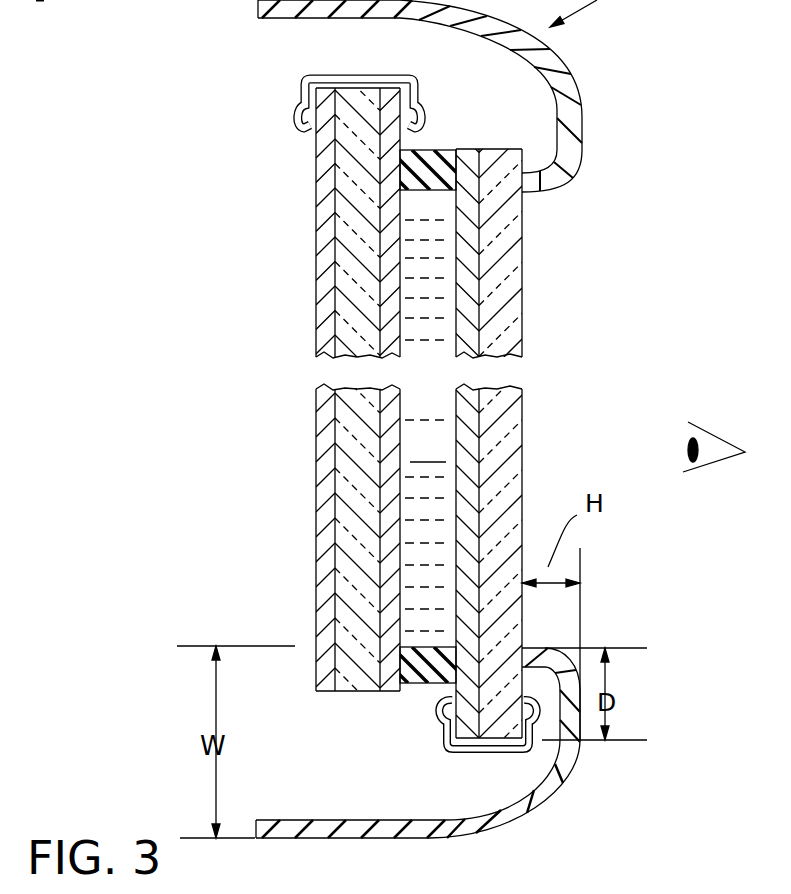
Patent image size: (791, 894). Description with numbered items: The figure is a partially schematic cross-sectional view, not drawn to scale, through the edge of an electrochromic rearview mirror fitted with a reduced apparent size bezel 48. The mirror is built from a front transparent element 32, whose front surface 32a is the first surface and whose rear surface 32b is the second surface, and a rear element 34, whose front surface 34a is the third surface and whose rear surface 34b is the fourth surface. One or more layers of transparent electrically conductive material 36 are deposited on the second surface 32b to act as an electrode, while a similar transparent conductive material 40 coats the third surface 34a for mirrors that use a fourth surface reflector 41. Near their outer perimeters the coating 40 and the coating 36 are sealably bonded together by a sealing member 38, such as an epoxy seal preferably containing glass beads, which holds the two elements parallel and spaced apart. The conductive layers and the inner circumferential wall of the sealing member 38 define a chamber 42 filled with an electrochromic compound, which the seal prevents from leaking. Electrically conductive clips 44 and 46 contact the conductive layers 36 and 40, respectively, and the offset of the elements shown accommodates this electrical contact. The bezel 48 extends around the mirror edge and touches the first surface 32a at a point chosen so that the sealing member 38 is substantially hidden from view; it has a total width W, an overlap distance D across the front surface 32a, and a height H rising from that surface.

The front transparent element 32 is at (522, 283).
The front surface 32a is at (522, 333).
The rear surface 32b is at (480, 240).
The rear element 34 is at (348, 258).
The front surface 34a is at (352, 212).
The rear surface 34b is at (335, 335).
The transparent electrically conductive material 36 is at (470, 517).
The sealing member 38 is at (440, 152).
The transparent electrically conductive material 40 is at (377, 582).
The fourth surface reflector 41 is at (317, 508).
The chamber 42 is at (427, 425).
The electrically conductive clip 44 is at (441, 703).
The electrically conductive clip 46 is at (300, 94).
The reduced apparent size bezel 48 is at (577, 78).